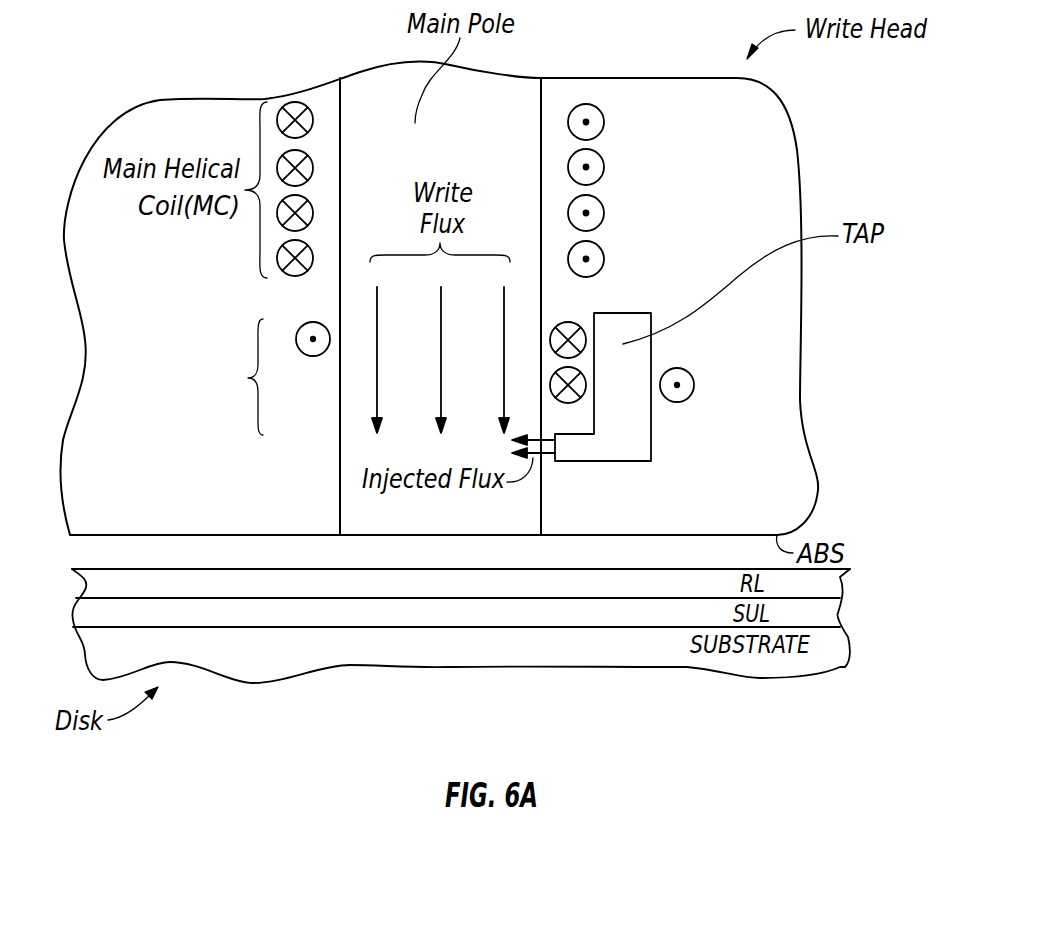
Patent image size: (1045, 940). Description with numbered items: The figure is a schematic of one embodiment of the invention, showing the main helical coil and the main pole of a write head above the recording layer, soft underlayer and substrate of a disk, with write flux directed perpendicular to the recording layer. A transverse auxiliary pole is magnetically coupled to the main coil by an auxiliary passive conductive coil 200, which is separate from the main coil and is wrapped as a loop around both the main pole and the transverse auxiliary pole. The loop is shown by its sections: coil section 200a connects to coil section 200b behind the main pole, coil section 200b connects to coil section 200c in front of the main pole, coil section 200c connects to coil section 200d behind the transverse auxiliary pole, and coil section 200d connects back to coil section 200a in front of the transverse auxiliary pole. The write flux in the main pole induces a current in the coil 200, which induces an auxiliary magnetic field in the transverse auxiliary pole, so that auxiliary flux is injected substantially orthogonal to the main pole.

The auxiliary passive conductive coil 200 is at (231, 377).
The coil section 200a is at (568, 322).
The coil section 200b is at (313, 357).
The coil section 200c is at (568, 403).
The coil section 200d is at (677, 368).